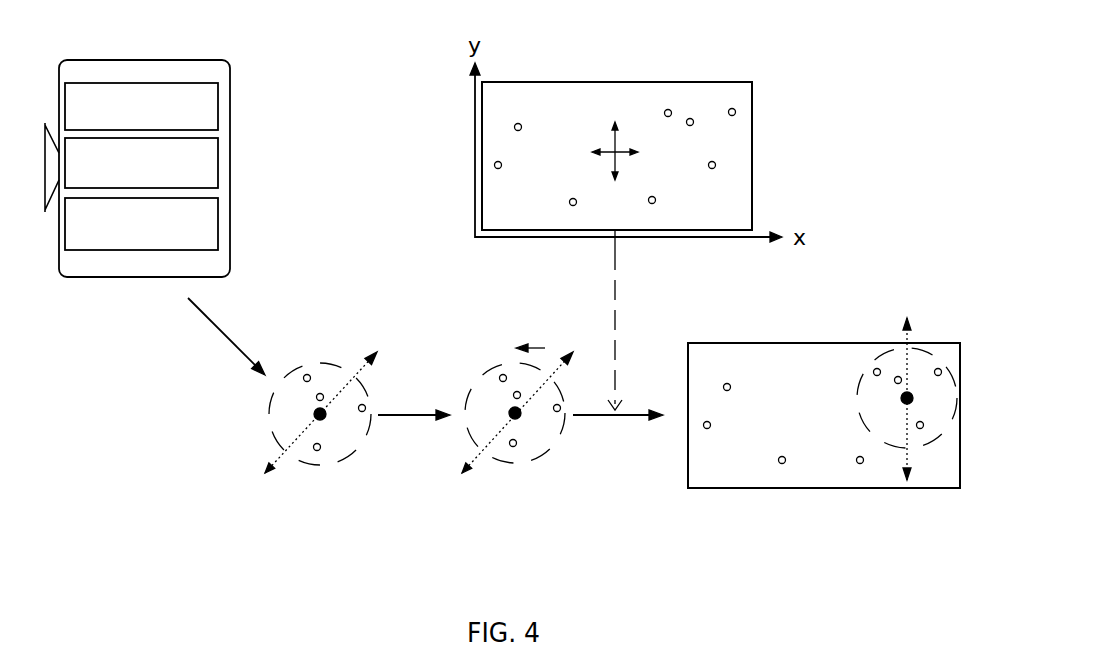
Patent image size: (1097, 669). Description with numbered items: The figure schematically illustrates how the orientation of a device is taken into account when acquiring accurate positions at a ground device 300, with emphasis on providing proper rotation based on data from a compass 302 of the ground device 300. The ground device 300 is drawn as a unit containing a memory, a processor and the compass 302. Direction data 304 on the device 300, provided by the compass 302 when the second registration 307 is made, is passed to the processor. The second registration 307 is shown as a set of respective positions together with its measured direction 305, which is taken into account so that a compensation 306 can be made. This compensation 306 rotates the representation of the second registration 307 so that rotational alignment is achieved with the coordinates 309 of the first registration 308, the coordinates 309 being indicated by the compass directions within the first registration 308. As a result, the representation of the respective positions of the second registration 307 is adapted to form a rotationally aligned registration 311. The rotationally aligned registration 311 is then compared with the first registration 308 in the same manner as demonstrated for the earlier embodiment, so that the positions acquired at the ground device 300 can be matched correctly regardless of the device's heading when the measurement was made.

The ground device 300 is at (140, 72).
The compass 302 is at (206, 233).
The direction data 304 is at (203, 317).
The measured direction 305 is at (361, 368).
The compensation 306 is at (543, 352).
The second registration 307 is at (343, 440).
The first registration 308 is at (492, 108).
The coordinates 309 is at (604, 148).
The rotationally aligned registration 311 is at (885, 358).